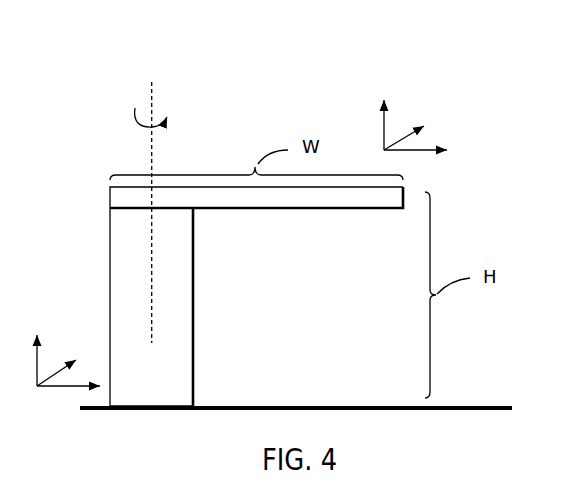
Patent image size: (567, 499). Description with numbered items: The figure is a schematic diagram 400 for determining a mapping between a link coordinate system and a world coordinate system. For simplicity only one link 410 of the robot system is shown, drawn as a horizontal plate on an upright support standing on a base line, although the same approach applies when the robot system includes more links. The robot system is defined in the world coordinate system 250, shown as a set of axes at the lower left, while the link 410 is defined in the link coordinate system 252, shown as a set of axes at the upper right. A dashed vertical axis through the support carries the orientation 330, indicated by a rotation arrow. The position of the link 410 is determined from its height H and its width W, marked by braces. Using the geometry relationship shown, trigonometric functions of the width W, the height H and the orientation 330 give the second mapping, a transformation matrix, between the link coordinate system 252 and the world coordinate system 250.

The schematic diagram 400 is at (150, 30).
The link 410 is at (271, 209).
The orientation 330 is at (168, 114).
The link coordinate system 252 is at (384, 123).
The world coordinate system 250 is at (38, 358).